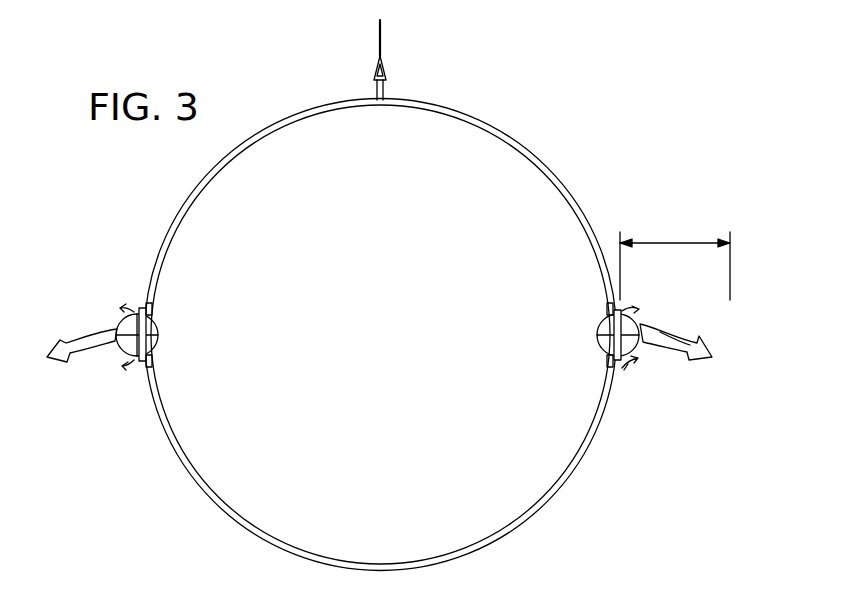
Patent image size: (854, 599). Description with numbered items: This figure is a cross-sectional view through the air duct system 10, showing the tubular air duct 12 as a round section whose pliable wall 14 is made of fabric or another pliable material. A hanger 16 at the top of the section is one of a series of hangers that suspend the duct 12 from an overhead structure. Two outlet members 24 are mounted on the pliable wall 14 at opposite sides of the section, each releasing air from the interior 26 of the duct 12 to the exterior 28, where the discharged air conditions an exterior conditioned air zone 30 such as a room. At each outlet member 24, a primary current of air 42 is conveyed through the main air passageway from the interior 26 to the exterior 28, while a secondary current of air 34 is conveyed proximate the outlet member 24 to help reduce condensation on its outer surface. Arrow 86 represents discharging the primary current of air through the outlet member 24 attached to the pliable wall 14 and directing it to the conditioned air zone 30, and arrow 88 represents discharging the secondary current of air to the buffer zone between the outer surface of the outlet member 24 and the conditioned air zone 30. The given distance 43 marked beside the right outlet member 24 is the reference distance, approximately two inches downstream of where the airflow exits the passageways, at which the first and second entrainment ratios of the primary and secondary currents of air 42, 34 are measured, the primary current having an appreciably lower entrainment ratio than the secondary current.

The air duct system 10 is at (656, 134).
The tubular air duct 12 is at (166, 223).
The pliable wall 14 is at (535, 152).
The hanger 16 is at (384, 38).
The outlet member 24 is at (118, 346).
The interior 26 is at (386, 318).
The exterior 28 is at (694, 405).
The exterior conditioned air zone 30 is at (751, 405).
The secondary current of air 34 is at (632, 368).
The primary current of air 42 is at (700, 360).
The given distance 43 is at (672, 243).
The arrow 86 is at (685, 322).
The arrow 88 is at (632, 362).